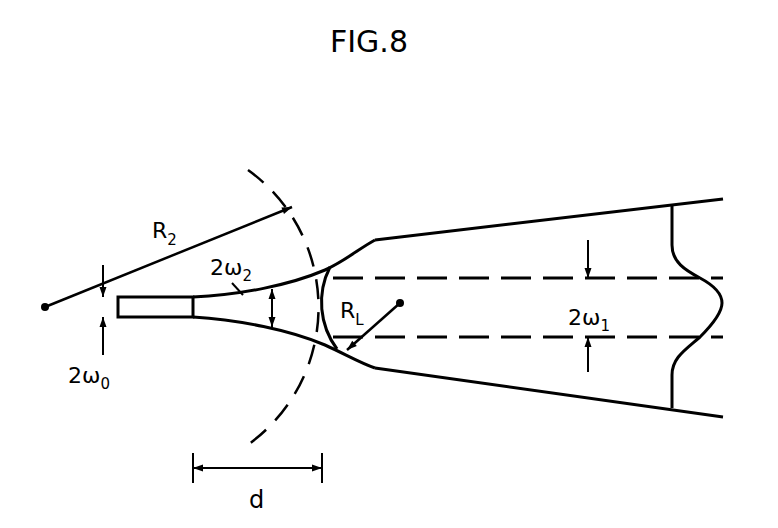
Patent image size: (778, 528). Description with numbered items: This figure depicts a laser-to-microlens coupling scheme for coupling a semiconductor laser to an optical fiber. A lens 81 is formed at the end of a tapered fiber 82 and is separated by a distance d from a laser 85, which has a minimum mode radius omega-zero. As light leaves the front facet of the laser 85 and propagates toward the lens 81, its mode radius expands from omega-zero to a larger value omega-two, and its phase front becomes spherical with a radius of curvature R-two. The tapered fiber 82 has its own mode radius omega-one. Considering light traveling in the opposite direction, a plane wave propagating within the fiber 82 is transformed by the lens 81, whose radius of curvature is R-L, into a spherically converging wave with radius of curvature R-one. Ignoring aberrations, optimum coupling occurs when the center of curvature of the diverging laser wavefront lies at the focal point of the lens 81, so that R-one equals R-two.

The lens 81 is at (322, 272).
The tapered fiber 82 is at (622, 385).
The laser 85 is at (145, 312).